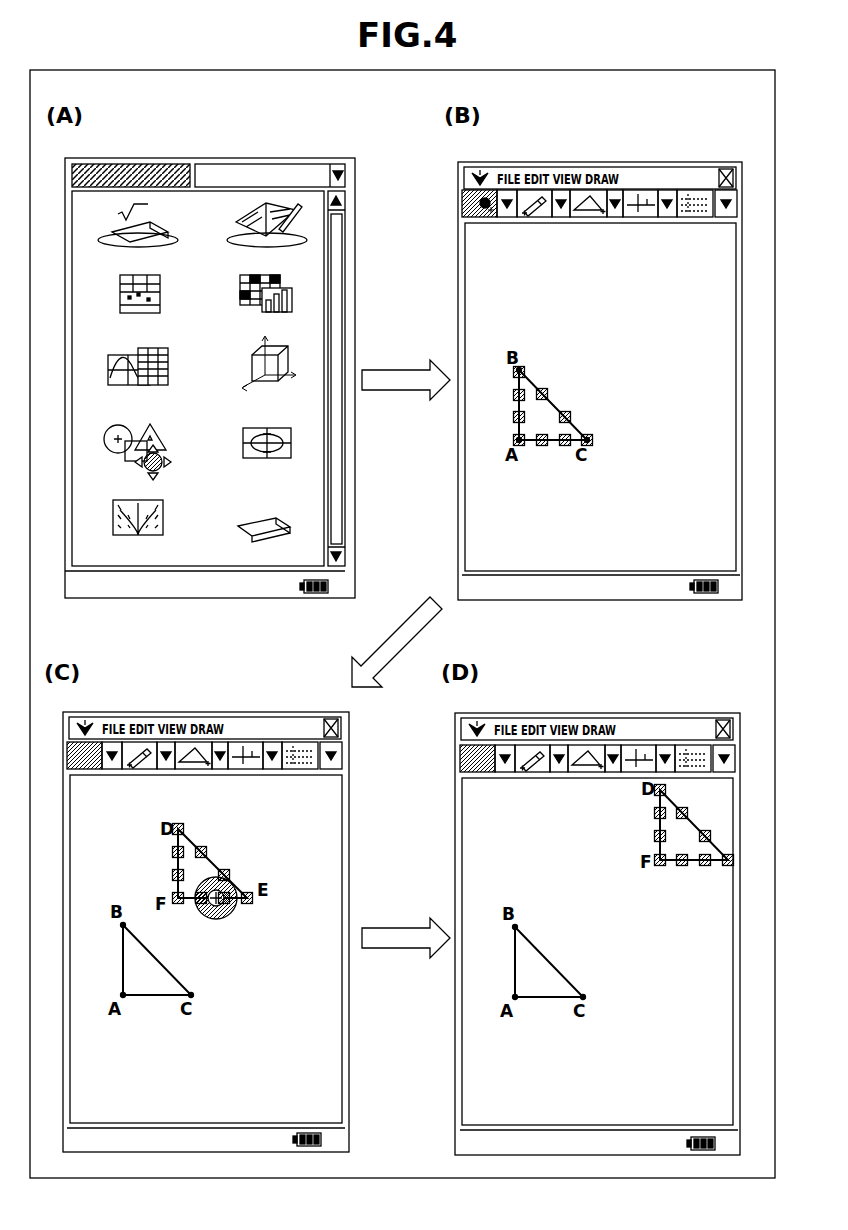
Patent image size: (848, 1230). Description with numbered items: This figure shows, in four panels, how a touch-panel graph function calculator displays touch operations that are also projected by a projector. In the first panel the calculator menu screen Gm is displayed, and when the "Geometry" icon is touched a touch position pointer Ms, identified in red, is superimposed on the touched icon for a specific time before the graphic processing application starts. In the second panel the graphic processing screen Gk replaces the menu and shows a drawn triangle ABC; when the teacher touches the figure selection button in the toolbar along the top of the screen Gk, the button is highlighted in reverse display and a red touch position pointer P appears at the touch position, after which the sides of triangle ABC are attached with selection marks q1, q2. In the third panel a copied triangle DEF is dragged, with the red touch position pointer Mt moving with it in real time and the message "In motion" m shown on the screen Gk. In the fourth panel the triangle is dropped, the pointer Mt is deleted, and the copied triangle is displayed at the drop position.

The calculator menu screen Gm is at (180, 203).
The touch position pointer Ms is at (170, 462).
The touch position pointer P is at (489, 199).
The graphic processing screen Gk is at (633, 238).
The selection mark q1 is at (543, 389).
The selection mark q2 is at (566, 412).
The touch position pointer Mt is at (230, 915).
The message "In motion" m is at (254, 1090).